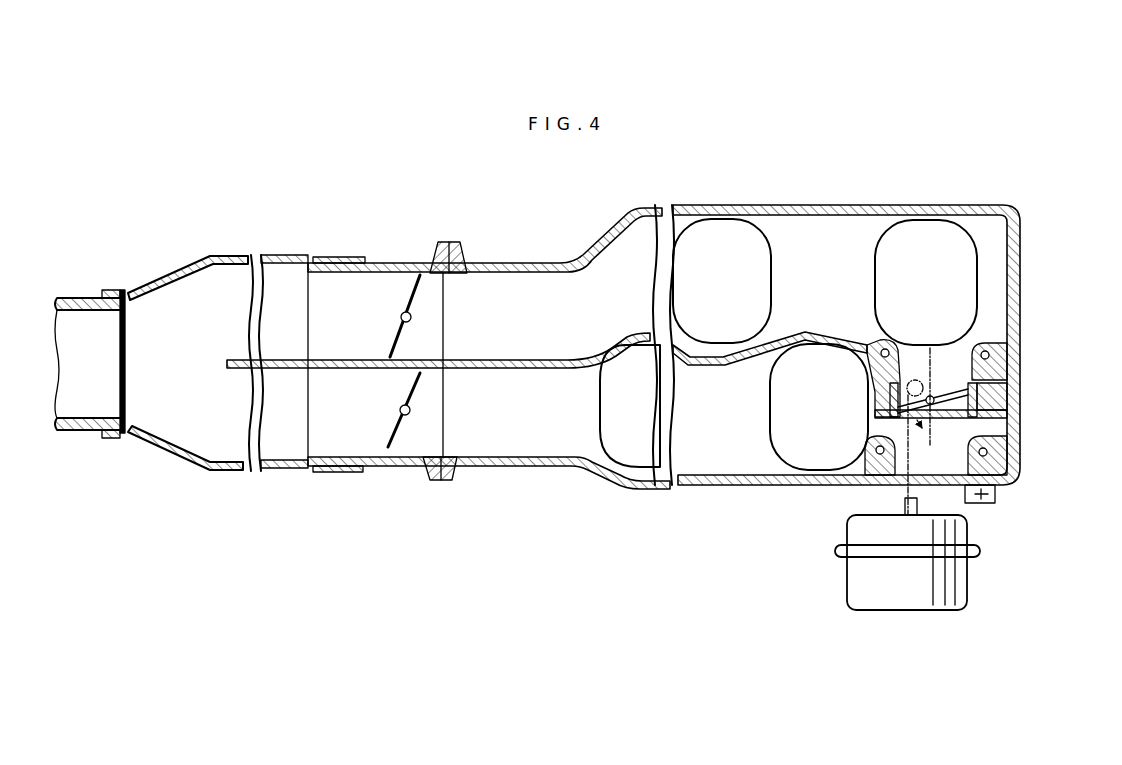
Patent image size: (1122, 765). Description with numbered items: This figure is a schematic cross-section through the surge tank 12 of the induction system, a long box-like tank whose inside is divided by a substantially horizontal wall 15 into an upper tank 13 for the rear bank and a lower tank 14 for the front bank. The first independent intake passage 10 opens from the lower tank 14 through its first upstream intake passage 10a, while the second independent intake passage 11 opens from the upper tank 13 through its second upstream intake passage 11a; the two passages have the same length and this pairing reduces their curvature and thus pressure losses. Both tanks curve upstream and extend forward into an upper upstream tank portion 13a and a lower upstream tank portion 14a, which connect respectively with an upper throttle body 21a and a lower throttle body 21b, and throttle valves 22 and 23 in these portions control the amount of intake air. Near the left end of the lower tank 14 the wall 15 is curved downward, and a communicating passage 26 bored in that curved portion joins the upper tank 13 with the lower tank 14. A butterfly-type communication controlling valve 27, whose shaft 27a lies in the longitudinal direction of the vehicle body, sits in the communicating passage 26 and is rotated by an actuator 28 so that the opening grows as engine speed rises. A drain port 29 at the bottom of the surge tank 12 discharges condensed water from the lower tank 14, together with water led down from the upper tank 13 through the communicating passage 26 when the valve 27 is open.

The first independent intake passage 10 is at (823, 441).
The first upstream intake passage 10a is at (773, 432).
The second independent intake passage 11 is at (731, 243).
The second upstream intake passage 11a is at (675, 292).
The surge tank 12 is at (858, 203).
The upper tank 13 is at (832, 274).
The upper upstream tank portion 13a is at (500, 287).
The lower tank 14 is at (719, 399).
The lower upstream tank portion 14a is at (510, 433).
The wall 15 is at (825, 328).
The upper throttle body 21a is at (342, 293).
The lower throttle body 21b is at (348, 430).
The throttle valve 22 is at (407, 282).
The throttle valve 23 is at (403, 433).
The communicating passage 26 is at (955, 387).
The communication controlling valve 27 is at (900, 383).
The shaft 27a is at (1007, 400).
The actuator 28 is at (953, 595).
The drain port 29 is at (1000, 493).